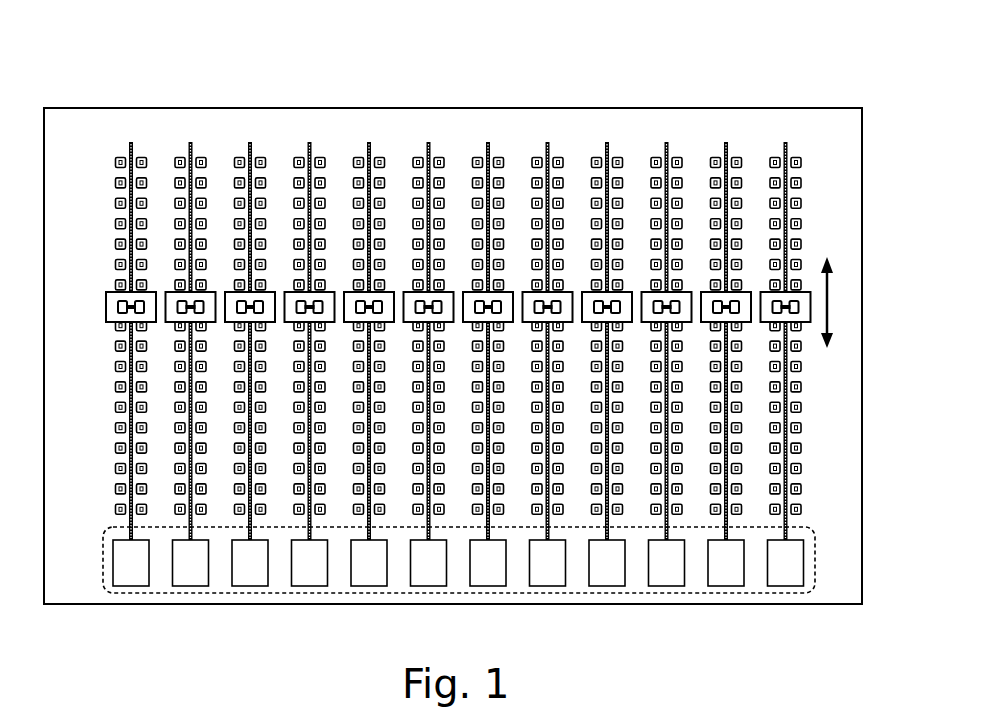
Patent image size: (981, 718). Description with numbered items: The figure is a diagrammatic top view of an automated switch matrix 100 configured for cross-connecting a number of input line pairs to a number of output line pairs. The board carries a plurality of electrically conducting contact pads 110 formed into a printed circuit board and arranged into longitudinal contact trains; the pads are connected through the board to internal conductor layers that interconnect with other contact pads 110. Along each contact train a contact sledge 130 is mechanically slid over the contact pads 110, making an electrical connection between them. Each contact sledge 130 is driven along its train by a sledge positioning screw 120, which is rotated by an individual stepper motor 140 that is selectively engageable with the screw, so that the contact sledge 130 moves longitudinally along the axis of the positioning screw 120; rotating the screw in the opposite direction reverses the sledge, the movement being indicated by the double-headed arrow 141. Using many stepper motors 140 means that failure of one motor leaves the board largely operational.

The switch matrix 100 is at (119, 64).
The contact pads 110 is at (319, 152).
The sledge positioning screw 120 is at (430, 143).
The contact sledge 130 is at (106, 307).
The stepper motor 140 is at (228, 594).
The direction of fader movement 141 is at (849, 455).